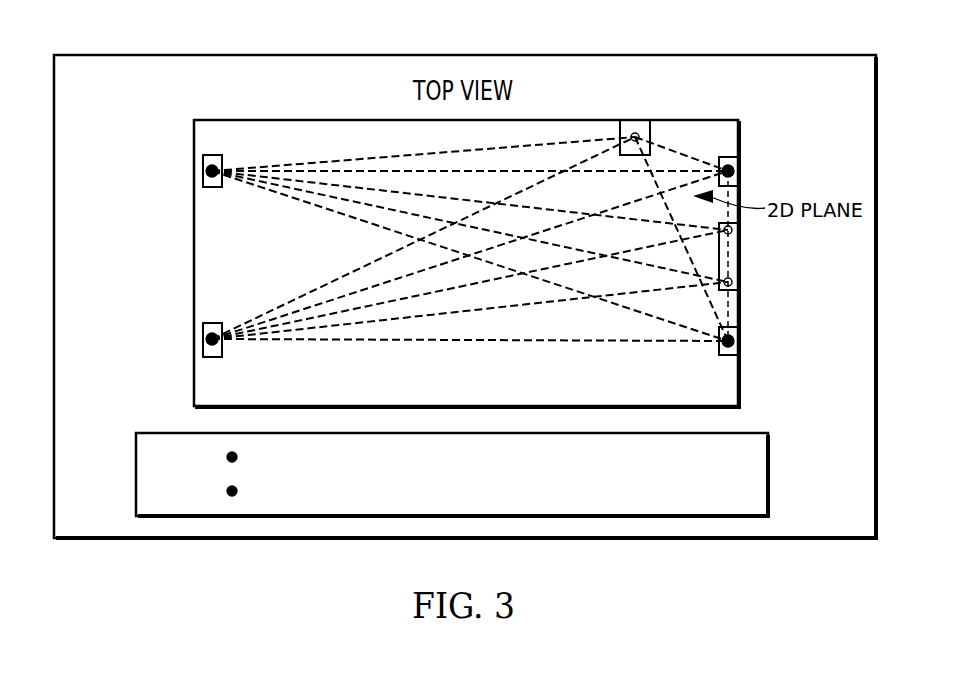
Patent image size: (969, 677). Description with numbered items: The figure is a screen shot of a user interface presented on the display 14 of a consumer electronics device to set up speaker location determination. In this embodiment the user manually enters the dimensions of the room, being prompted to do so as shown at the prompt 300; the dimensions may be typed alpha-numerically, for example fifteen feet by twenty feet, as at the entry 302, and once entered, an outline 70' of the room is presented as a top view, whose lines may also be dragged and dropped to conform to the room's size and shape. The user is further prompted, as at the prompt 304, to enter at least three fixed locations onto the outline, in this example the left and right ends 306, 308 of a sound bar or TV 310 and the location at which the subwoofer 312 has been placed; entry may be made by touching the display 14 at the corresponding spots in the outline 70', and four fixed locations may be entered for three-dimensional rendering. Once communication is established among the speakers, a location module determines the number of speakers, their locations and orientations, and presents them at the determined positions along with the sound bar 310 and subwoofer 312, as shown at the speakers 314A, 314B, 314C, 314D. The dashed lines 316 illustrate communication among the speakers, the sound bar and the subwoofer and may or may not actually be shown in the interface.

The display 14 is at (54, 291).
The outline 70' is at (439, 264).
The prompt to enter room dimensions 300 is at (226, 457).
The alpha-numeric dimension entry 302 is at (630, 456).
The prompt to enter fixed locations 304 is at (226, 491).
The left end of sound bar 306 is at (738, 286).
The right end of sound bar 308 is at (738, 233).
The sound bar 310 is at (738, 259).
The subwoofer 312 is at (635, 133).
The speaker 314A is at (203, 171).
The speaker 314B is at (203, 339).
The speaker 314C is at (738, 176).
The speaker 314D is at (738, 345).
The lines 316 is at (600, 343).